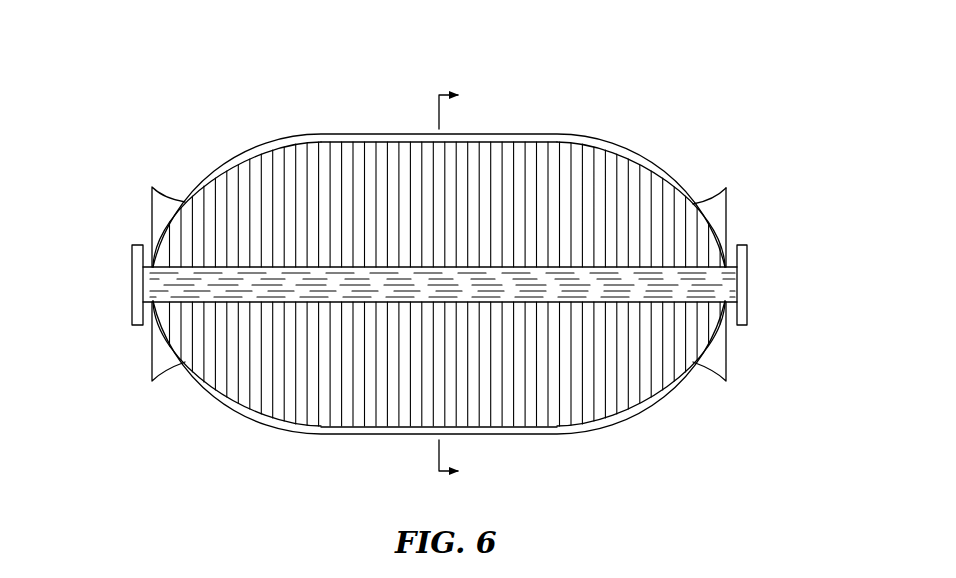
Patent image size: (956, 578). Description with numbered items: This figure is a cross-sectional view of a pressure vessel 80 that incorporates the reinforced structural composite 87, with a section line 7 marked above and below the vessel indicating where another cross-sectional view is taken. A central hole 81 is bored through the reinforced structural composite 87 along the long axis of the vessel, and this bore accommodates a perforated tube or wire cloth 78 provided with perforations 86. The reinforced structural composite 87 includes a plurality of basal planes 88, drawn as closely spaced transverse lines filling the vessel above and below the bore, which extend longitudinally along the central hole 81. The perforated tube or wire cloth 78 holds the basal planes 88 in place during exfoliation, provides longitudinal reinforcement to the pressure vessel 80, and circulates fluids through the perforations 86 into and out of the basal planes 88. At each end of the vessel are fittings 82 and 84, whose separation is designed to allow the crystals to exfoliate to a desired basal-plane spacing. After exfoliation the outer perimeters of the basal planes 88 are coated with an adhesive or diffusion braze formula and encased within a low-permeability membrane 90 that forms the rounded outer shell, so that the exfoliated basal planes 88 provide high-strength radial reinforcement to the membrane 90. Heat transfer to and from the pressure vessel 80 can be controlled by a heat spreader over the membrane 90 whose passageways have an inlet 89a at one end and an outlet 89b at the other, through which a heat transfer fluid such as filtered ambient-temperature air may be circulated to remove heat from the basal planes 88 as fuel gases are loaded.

The pressure vessel 80 is at (678, 84).
The perforated tube or wire cloth 78 is at (748, 288).
The basal planes 88 is at (569, 154).
The perforations 86 is at (178, 275).
The reinforced structural composite 87 is at (245, 390).
The central hole 81 is at (110, 264).
The fitting 82 is at (132, 321).
The inlet 89a is at (152, 190).
The fitting 84 is at (748, 250).
The outlet 89b is at (726, 366).
The low-permeability membrane 90 is at (706, 226).
The section line 7- 7 is at (463, 284).